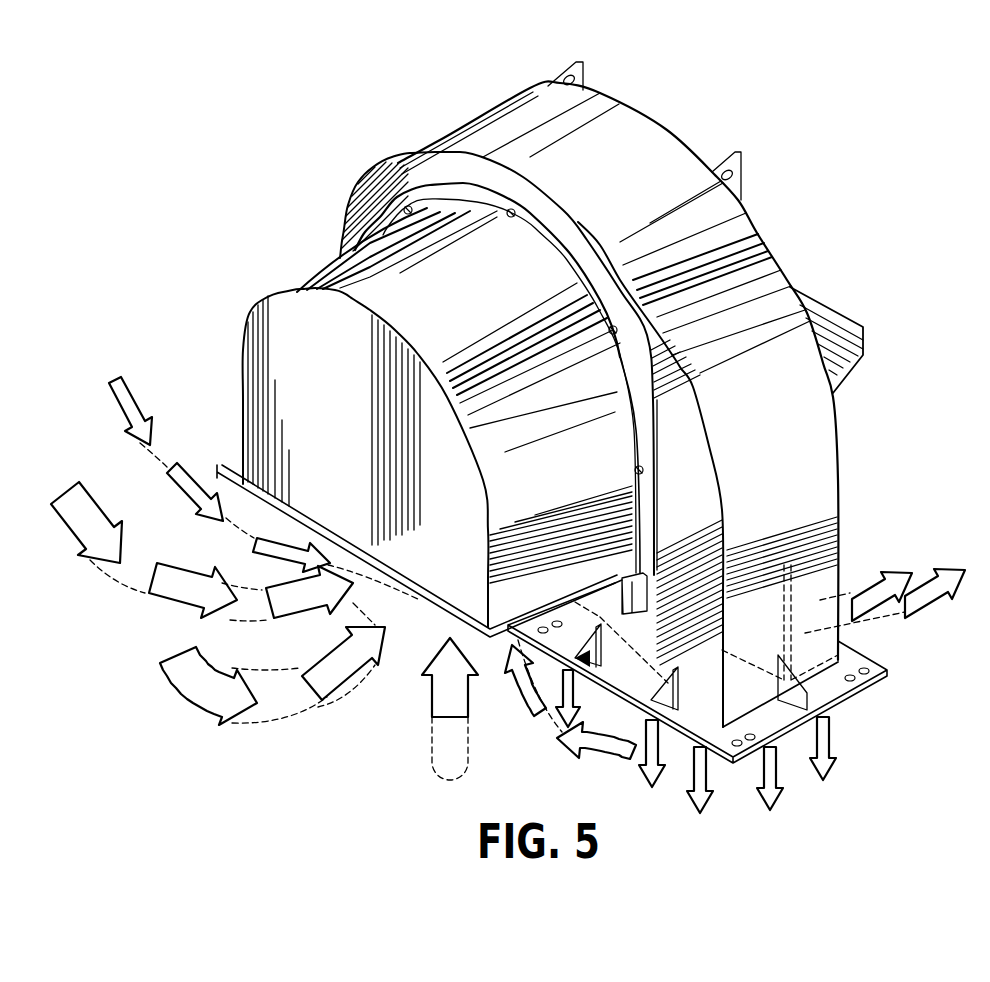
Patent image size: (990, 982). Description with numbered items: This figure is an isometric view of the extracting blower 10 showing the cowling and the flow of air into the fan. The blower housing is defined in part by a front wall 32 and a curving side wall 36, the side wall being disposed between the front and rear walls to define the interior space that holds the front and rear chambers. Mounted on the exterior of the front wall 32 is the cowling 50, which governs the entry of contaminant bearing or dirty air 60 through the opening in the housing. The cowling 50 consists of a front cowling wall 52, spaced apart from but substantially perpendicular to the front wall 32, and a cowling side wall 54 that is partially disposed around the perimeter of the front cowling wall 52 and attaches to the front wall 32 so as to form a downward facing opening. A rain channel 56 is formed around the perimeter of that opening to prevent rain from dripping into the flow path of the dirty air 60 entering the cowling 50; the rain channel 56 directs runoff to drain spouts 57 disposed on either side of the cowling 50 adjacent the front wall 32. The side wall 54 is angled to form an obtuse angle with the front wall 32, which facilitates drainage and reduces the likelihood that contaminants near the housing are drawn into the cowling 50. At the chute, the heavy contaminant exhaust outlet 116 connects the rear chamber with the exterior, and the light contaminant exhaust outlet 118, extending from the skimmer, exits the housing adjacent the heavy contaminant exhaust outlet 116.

The extracting blower 10 is at (696, 124).
The front wall 32 is at (713, 700).
The curving side wall 36 is at (818, 540).
The cowling 50 is at (307, 266).
The front cowling wall 52 is at (262, 352).
The cowling side wall 54 is at (340, 256).
The rain channel 56 is at (473, 607).
The drain spout 57 is at (645, 580).
The dirty air 60 is at (197, 695).
The heavy contaminant exhaust outlet 116 is at (917, 610).
The light contaminant exhaust outlet 118 is at (867, 592).